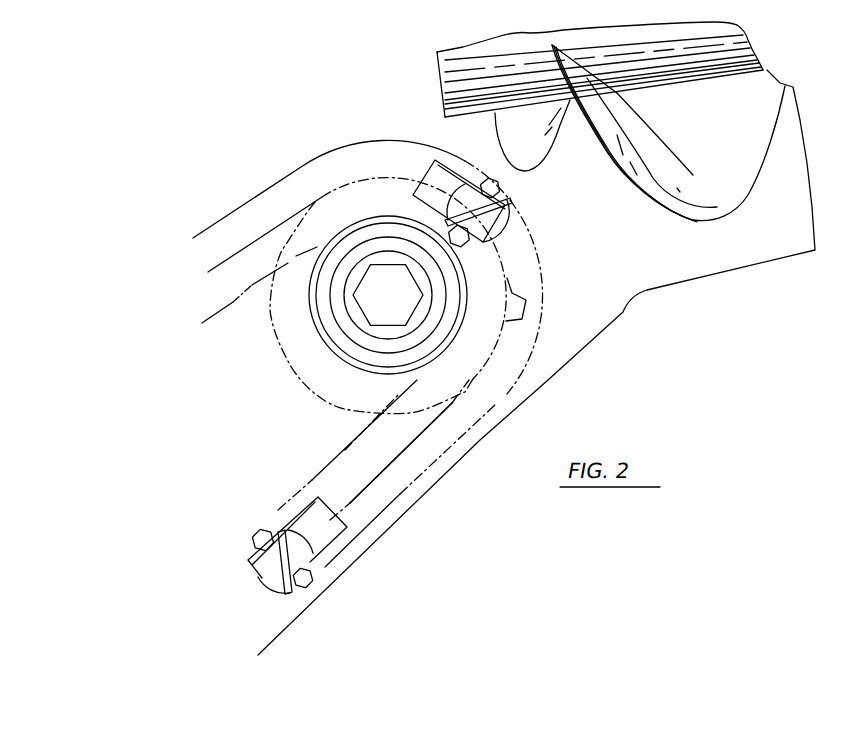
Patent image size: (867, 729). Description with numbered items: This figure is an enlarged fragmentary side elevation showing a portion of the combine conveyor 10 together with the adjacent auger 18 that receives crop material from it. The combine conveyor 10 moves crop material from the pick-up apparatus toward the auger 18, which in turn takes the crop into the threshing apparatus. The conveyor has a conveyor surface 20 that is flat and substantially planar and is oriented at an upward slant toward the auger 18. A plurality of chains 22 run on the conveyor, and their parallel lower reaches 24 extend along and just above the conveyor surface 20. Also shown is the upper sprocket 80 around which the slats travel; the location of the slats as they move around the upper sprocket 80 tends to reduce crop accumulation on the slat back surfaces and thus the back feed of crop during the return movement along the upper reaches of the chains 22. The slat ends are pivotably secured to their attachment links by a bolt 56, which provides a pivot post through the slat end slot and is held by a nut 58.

The combine conveyor 10 is at (374, 118).
The auger 18 is at (758, 85).
The conveyor surface 20 is at (573, 352).
The chains 22 is at (367, 487).
The lower reaches 24 is at (325, 522).
The bolt 56 is at (308, 578).
The nut 58 is at (263, 536).
The upper sprocket 80 is at (290, 332).